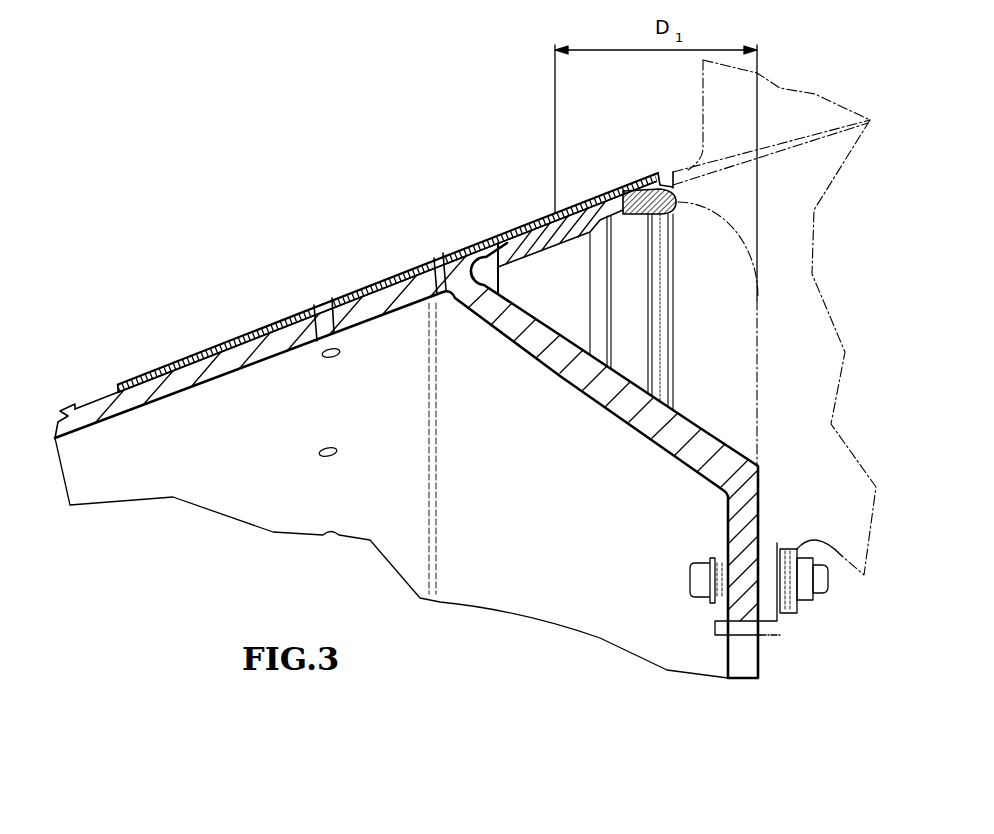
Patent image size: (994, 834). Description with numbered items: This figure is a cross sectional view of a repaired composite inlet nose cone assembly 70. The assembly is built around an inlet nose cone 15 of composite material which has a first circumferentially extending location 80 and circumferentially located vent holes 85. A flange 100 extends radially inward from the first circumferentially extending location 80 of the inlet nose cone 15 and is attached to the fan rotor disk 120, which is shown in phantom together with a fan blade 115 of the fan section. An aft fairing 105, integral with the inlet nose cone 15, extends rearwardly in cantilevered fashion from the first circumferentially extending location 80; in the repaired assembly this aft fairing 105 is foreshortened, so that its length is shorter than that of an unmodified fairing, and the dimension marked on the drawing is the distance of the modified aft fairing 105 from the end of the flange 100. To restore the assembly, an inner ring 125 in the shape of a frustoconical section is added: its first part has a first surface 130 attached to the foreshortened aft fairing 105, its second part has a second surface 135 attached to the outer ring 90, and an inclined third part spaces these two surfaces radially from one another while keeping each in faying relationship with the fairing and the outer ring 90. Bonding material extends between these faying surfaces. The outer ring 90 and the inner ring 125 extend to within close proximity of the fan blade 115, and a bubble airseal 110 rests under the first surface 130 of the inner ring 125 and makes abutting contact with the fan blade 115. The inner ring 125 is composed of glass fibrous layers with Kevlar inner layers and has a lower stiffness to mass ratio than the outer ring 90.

The inlet nose cone 15 is at (66, 398).
The inlet nose cone assembly 70 is at (233, 257).
The first circumferentially extending location 80 is at (443, 283).
The vent holes 85 is at (340, 353).
The outer ring 90 is at (578, 196).
The flange 100 is at (743, 507).
The aft fairing 105 is at (510, 240).
The bubble airseal 110 is at (675, 208).
The fan blade 115 is at (712, 92).
The fan rotor disk 120 is at (757, 433).
The inner ring 125 is at (608, 237).
The first surface 130 is at (531, 237).
The second surface 135 is at (614, 184).